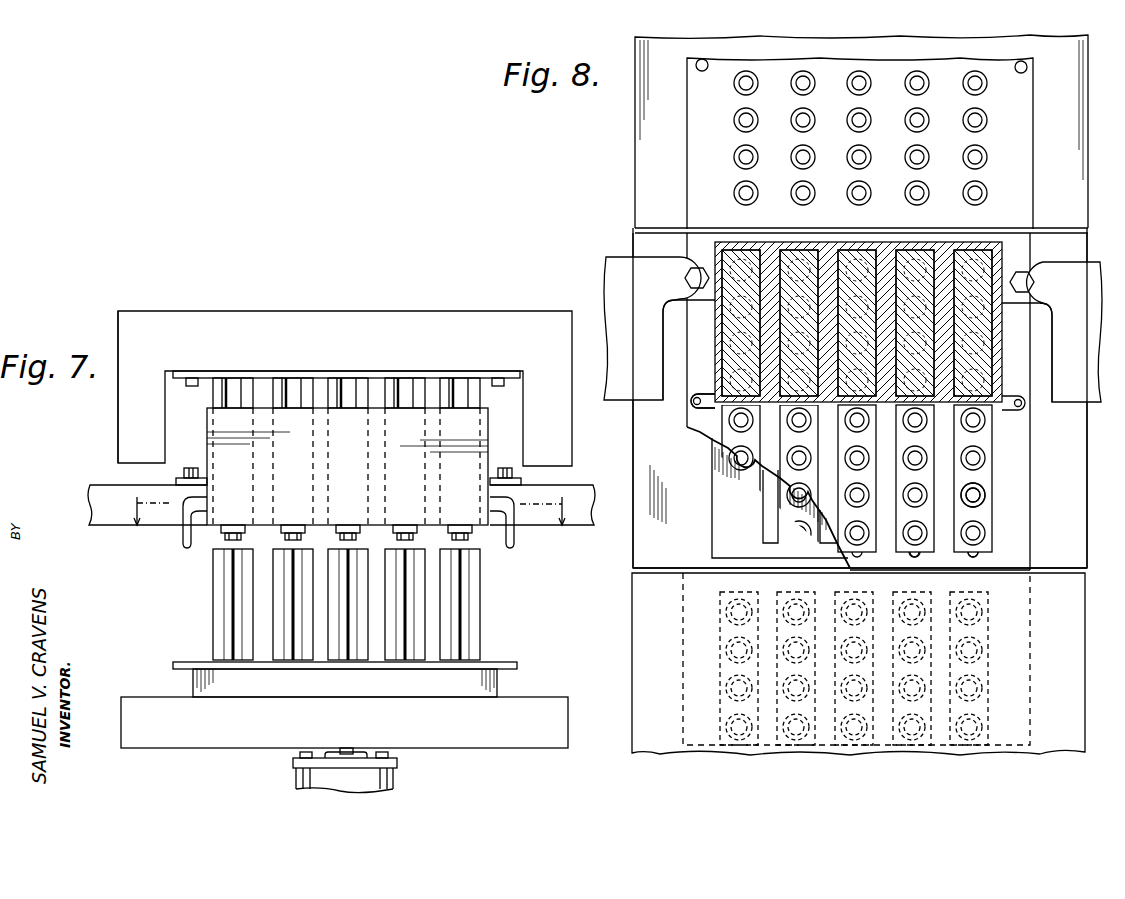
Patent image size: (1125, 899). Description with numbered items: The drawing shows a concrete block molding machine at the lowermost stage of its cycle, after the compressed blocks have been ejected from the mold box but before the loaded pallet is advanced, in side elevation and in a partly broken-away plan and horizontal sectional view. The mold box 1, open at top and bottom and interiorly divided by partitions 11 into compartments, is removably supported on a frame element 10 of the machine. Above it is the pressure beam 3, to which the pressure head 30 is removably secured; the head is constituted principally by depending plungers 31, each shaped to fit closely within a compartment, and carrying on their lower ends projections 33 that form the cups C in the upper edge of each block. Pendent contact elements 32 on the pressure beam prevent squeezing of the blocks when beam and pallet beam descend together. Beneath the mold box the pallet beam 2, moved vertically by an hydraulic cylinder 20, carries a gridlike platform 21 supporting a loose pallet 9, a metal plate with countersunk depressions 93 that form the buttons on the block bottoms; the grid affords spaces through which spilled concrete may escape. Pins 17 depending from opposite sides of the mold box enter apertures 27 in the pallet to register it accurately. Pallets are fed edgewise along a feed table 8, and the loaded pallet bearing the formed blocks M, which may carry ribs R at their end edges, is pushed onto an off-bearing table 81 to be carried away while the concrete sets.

In FIG. 7, the mold box 1 is at (488, 432).
In FIG. 8, the mold box 1 is at (715, 317).
In FIG. 7, the pallet beam 2 is at (522, 697).
In FIG. 8, the pallet beam 2 is at (640, 535).
In FIG. 7, the pressure beam 3 is at (303, 328).
In FIG. 7, the feed table 8 is at (347, 511).
In FIG. 8, the feed table 8 is at (652, 158).
In FIG. 7, the pallet 9 is at (505, 660).
In FIG. 8, the pallet 9 is at (1008, 148).
In FIG. 7, the frame element 10 is at (120, 486).
In FIG. 8, the frame element 10 is at (641, 290).
In FIG. 8, the partitions 11 is at (948, 256).
In FIG. 7, the pins 17 is at (185, 541).
In FIG. 8, the pins 17 is at (695, 403).
In FIG. 7, the hydraulic cylinder 20 is at (370, 778).
In FIG. 7, the platform 21 is at (200, 683).
In FIG. 8, the platform 21 is at (722, 517).
In FIG. 8, the apertures 27 is at (703, 59).
In FIG. 7, the pressure head 30 is at (232, 378).
In FIG. 7, the plungers 31 is at (358, 388).
In FIG. 8, the plungers 31 is at (835, 255).
In FIG. 7, the contact elements 32 is at (118, 432).
In FIG. 7, the projections 33 is at (290, 541).
In FIG. 8, the off-bearing table 81 is at (645, 710).
In FIG. 8, the depressions 93 is at (912, 72).
In FIG. 7, the formed blocks M is at (415, 632).
In FIG. 8, the formed blocks M is at (927, 522).
In FIG. 8, the cups C is at (985, 493).
In FIG. 8, the ribs R is at (916, 557).